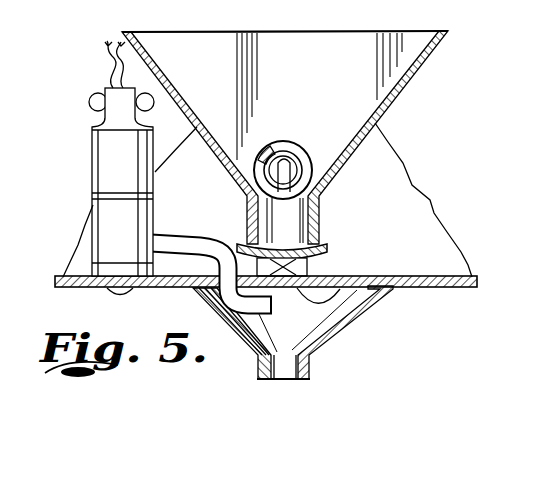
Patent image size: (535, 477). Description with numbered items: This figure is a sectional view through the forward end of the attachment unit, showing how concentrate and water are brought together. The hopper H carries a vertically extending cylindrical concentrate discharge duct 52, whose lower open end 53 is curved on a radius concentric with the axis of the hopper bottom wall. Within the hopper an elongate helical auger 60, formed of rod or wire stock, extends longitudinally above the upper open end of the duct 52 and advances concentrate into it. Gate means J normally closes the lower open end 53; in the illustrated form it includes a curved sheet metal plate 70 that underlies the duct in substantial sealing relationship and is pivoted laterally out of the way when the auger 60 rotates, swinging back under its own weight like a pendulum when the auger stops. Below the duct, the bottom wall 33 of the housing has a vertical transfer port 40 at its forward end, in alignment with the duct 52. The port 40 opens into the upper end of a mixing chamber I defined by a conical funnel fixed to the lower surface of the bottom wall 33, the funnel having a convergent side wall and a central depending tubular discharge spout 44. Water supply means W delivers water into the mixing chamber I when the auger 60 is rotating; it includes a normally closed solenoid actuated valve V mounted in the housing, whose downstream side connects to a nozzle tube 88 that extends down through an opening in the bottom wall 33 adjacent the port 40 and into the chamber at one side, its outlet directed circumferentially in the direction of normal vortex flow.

The hopper H is at (318, 31).
The plate 70 is at (478, 247).
The concentrate discharge duct 52 is at (320, 207).
The helical auger 60 is at (290, 143).
The gate means J is at (342, 241).
The lower open end 53 is at (320, 262).
The bottom wall 33 is at (460, 289).
The transfer port 40 is at (342, 319).
The mixing chamber I is at (340, 331).
The discharge spout 44 is at (309, 373).
The nozzle tube 88 is at (213, 302).
The solenoid actuated valve V is at (88, 156).
The water supply means W is at (82, 218).